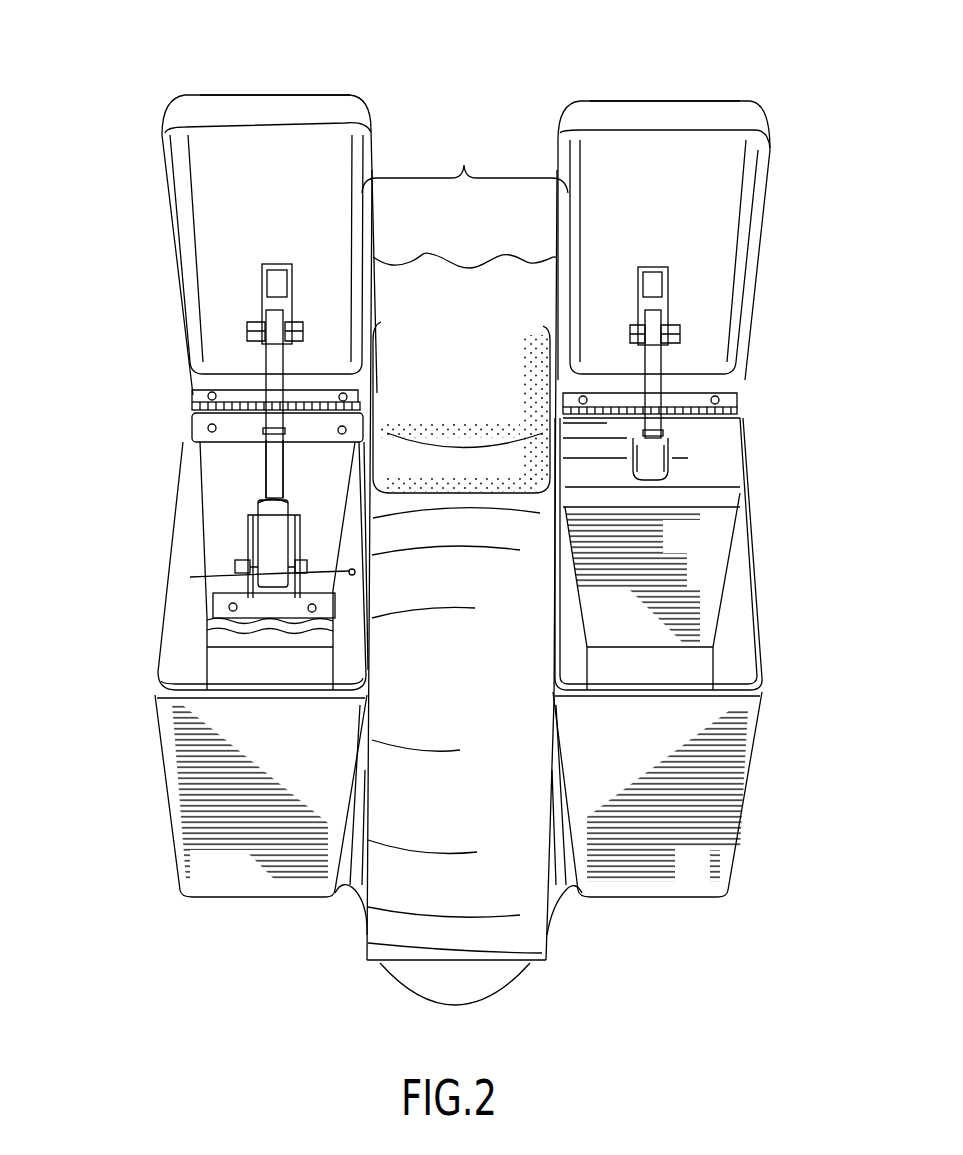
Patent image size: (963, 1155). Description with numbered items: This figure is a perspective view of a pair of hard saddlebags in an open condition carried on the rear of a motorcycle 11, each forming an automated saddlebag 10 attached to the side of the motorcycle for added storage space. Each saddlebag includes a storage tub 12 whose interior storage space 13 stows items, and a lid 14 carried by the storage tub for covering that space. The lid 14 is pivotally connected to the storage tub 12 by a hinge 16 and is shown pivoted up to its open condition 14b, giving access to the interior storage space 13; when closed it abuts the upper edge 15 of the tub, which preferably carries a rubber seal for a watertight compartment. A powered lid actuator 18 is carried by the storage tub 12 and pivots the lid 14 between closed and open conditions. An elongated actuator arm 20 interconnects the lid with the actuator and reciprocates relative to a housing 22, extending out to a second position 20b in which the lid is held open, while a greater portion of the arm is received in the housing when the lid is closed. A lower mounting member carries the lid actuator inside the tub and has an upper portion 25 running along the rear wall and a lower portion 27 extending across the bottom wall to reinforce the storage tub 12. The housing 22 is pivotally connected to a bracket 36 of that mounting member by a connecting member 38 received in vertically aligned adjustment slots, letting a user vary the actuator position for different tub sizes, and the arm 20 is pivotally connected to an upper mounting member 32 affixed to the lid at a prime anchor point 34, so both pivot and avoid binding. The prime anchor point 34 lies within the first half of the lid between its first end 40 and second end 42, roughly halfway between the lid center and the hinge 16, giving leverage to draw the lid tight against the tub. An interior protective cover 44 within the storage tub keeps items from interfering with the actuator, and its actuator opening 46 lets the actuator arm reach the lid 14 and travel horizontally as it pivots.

The automated saddlebag 10 is at (135, 431).
The motorcycle 11 is at (433, 895).
The storage tub 12 is at (212, 883).
The interior storage space 13 is at (215, 668).
The lid 14 is at (458, 548).
The open condition 14b is at (143, 176).
The upper edge 15 is at (170, 553).
The hinge 16 is at (197, 407).
The lid actuator 18 is at (248, 491).
The actuator arm 20 is at (272, 369).
The second position 20b is at (628, 360).
The housing 22 is at (277, 463).
The upper portion 25 is at (222, 540).
The lower portion 27 is at (323, 608).
The upper mounting member 32 is at (262, 275).
The prime anchor point 34 is at (300, 279).
The bracket 36 is at (297, 530).
The connecting member 38 is at (305, 570).
The first end 40 is at (200, 383).
The second end 42 is at (306, 95).
The interior protective cover 44 is at (708, 562).
The actuator opening 46 is at (633, 467).